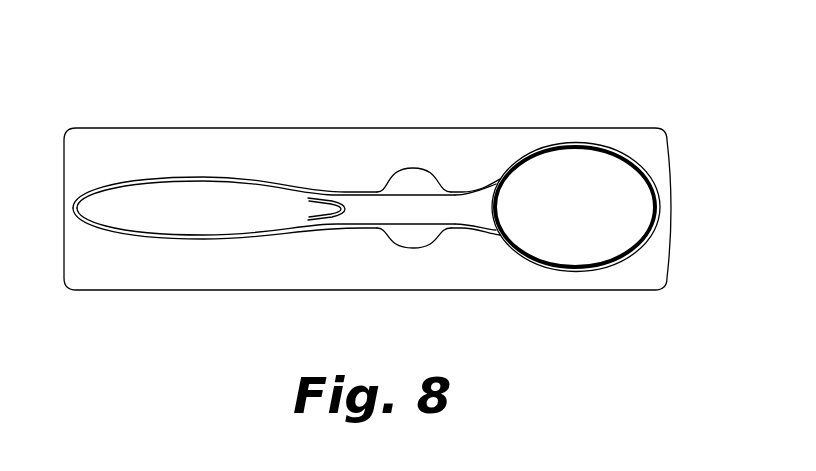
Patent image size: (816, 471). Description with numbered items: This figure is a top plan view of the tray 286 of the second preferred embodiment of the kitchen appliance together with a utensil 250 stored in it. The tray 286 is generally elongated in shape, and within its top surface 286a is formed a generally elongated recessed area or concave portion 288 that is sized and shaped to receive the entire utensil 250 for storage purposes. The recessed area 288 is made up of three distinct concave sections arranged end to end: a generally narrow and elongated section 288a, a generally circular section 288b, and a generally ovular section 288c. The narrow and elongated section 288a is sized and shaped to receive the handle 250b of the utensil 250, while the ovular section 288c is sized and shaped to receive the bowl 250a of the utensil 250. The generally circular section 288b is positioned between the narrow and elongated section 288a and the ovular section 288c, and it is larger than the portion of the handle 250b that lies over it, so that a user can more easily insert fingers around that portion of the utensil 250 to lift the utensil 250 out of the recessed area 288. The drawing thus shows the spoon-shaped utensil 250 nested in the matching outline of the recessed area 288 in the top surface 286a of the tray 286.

The utensil 250 is at (382, 193).
The bowl 250a is at (592, 206).
The handle 250b is at (264, 208).
The tray 286 is at (648, 265).
The top surface 286a is at (336, 147).
The recessed area 288 is at (454, 200).
The narrow and elongated section 288a is at (195, 176).
The circular section 288b is at (417, 250).
The ovular section 288c is at (555, 270).